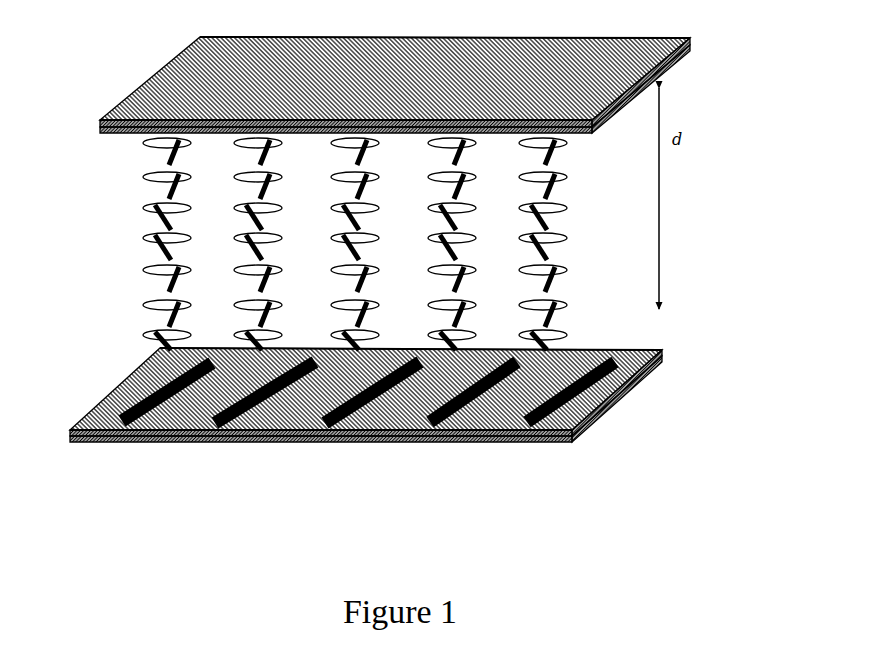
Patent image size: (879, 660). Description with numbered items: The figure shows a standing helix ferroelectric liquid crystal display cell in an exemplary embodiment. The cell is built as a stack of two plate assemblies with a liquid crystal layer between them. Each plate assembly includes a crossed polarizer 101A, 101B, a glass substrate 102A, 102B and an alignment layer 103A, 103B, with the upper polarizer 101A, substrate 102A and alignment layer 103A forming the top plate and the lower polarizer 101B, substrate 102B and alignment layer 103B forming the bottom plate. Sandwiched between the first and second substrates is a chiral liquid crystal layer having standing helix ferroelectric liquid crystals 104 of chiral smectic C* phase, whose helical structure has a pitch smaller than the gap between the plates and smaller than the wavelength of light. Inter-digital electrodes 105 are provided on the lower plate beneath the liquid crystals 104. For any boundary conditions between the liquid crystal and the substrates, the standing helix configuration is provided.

The crossed polarizer 101A is at (688, 30).
The glass substrate 102A is at (686, 46).
The alignment layer 103A is at (687, 56).
The crossed polarizer 101B is at (488, 443).
The glass substrate 102B is at (588, 424).
The alignment layer 103B is at (612, 400).
The standing helix ferroelectric liquid crystals 104 is at (148, 305).
The inter-digital electrodes 105 is at (182, 440).